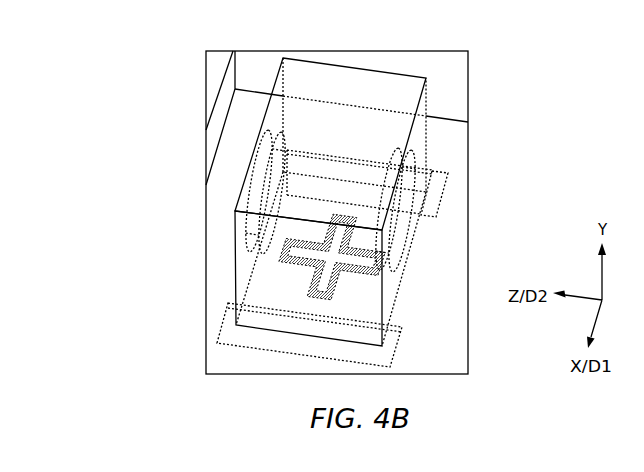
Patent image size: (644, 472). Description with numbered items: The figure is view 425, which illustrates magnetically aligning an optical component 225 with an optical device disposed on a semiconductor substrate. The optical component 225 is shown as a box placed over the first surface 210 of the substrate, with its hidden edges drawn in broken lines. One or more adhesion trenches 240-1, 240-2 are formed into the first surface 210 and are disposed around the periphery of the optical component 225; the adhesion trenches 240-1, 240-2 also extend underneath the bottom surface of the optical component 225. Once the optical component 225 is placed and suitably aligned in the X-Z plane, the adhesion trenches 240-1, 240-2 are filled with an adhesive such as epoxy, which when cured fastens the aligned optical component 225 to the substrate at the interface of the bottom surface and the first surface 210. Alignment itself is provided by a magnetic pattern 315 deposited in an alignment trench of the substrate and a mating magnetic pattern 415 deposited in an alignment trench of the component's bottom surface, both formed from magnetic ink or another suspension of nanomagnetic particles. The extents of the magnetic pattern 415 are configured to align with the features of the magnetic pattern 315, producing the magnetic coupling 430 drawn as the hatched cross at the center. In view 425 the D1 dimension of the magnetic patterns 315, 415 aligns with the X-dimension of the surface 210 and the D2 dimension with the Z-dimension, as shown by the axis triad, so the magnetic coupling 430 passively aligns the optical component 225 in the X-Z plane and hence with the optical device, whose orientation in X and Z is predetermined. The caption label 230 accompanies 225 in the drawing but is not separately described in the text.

The first surface 210 is at (249, 98).
The optical component 225 is at (332, 179).
The enclosure wall 230 is at (351, 75).
The adhesion trench 240-1 is at (233, 336).
The adhesion trench 240-2 is at (438, 181).
The magnetic pattern 315 is at (332, 257).
The magnetic pattern 415 is at (318, 274).
The view 425 is at (494, 71).
The magnetic coupling 430 is at (223, 258).